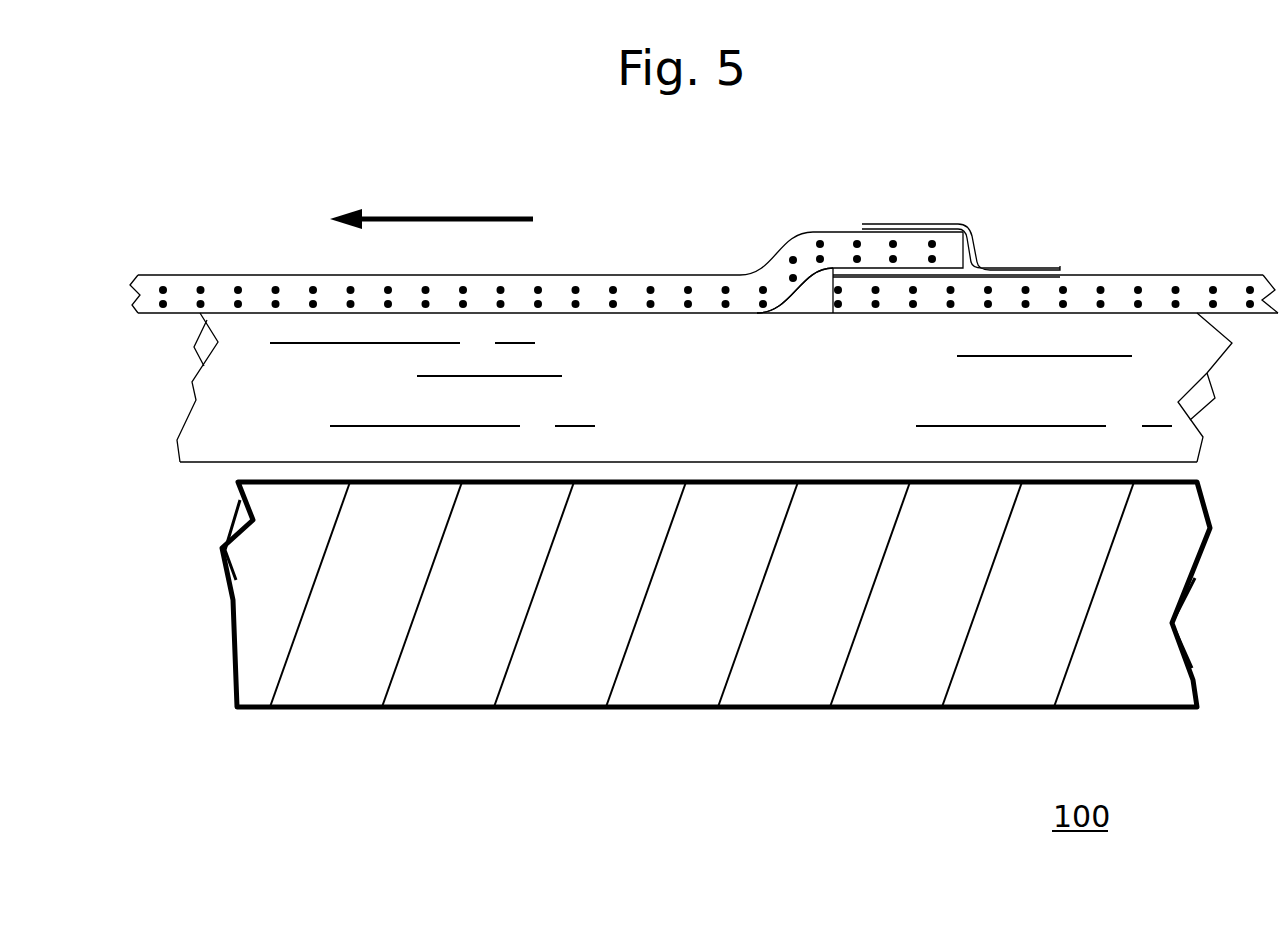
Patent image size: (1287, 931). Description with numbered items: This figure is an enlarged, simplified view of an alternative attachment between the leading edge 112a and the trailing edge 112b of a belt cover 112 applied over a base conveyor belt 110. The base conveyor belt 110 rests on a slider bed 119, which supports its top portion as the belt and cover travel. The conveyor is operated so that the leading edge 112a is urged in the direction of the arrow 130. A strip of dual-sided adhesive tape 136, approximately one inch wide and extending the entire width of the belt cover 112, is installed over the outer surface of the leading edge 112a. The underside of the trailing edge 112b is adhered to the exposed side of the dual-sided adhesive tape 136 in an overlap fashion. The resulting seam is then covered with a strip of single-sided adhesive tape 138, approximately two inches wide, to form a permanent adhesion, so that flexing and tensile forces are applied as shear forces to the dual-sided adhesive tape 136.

The base conveyor belt 110 is at (233, 438).
The belt cover 112 is at (276, 287).
The leading edge 112a is at (947, 290).
The trailing edge 112b is at (827, 237).
The slider bed 119 is at (413, 695).
The arrow 130 is at (415, 219).
The dual-sided adhesive tape 136 is at (828, 268).
The single-sided adhesive tape 138 is at (977, 247).